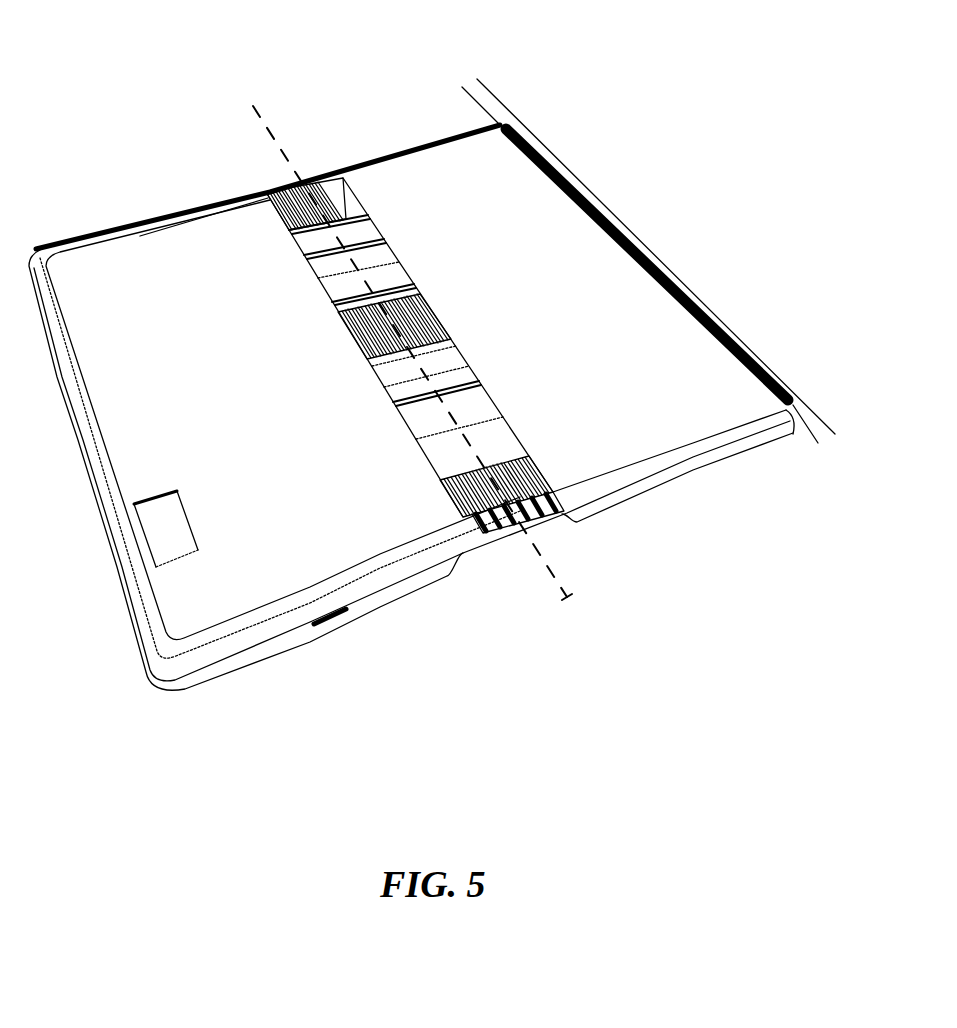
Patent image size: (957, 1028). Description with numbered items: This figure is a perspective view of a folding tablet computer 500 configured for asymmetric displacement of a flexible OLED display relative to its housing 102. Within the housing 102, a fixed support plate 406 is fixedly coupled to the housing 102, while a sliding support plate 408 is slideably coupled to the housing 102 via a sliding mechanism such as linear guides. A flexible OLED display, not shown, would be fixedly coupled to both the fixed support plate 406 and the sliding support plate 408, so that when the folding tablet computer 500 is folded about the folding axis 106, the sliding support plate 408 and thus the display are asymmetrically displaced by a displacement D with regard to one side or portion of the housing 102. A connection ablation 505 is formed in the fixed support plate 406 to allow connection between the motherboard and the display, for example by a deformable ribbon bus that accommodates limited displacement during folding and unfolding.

The folding tablet computer 500 is at (128, 87).
The housing 102 is at (210, 673).
The folding axis 106 is at (567, 597).
The fixed support plate 406 is at (265, 558).
The sliding support plate 408 is at (453, 207).
The connection ablation 505 is at (158, 528).
The displacement D is at (513, 78).